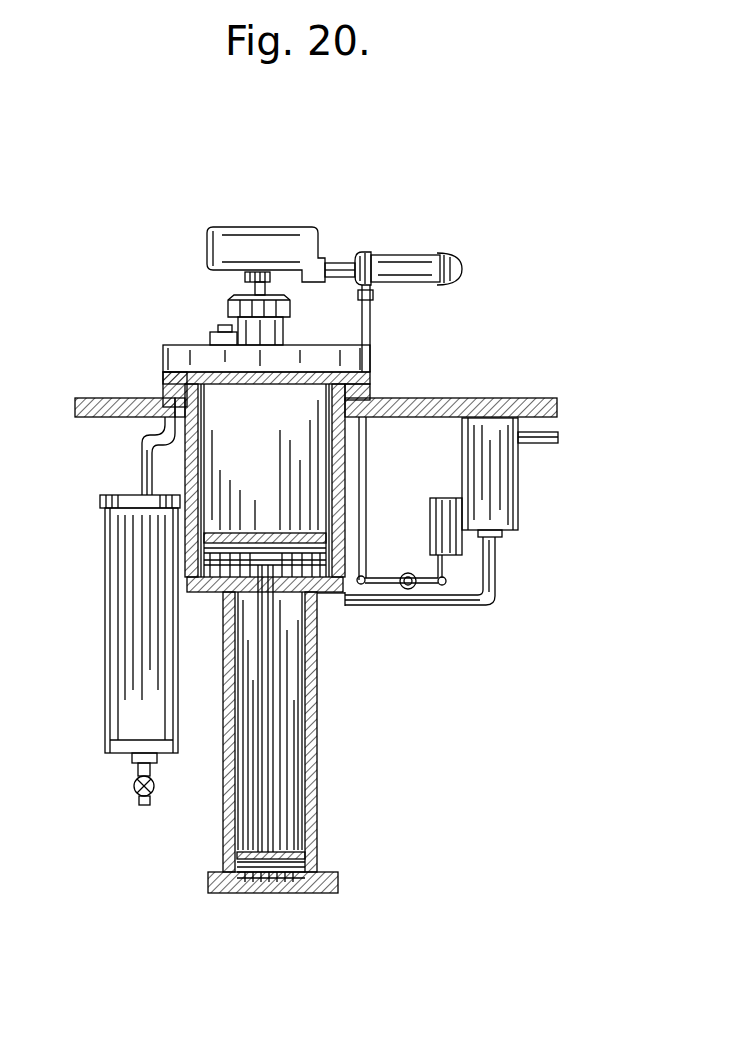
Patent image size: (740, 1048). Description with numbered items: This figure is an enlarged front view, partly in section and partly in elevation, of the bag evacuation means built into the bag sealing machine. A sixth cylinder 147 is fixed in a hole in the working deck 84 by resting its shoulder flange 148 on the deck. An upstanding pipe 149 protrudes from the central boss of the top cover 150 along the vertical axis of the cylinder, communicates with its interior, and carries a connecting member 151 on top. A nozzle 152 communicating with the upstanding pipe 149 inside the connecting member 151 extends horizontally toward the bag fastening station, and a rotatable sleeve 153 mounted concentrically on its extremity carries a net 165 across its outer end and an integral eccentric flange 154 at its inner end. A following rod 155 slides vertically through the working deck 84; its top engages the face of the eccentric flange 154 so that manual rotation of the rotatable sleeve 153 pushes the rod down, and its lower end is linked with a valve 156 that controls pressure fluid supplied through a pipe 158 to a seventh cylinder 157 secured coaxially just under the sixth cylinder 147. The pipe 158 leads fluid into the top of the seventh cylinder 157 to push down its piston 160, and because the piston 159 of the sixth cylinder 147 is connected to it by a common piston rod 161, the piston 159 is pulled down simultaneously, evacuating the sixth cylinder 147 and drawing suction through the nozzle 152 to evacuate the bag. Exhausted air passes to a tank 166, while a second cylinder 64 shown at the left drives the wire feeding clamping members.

The second cylinder 64 is at (141, 470).
The working deck 84 is at (524, 405).
The sixth cylinder 147 is at (280, 443).
The shoulder flange 148 is at (163, 383).
The upstanding pipe 149 is at (255, 289).
The top cover 150 is at (182, 345).
The connecting member 151 is at (262, 227).
The nozzle 152 is at (343, 263).
The rotatable sleeve 153 is at (413, 256).
The eccentric flange 154 is at (366, 254).
The following rod 155 is at (372, 333).
The valve 156 is at (518, 480).
The seventh cylinder 157 is at (317, 694).
The pipe 158 is at (558, 440).
The piston 159 is at (298, 852).
The piston 160 is at (330, 600).
The common piston rod 161 is at (270, 737).
The net 165 is at (460, 268).
The tank 166 is at (110, 596).